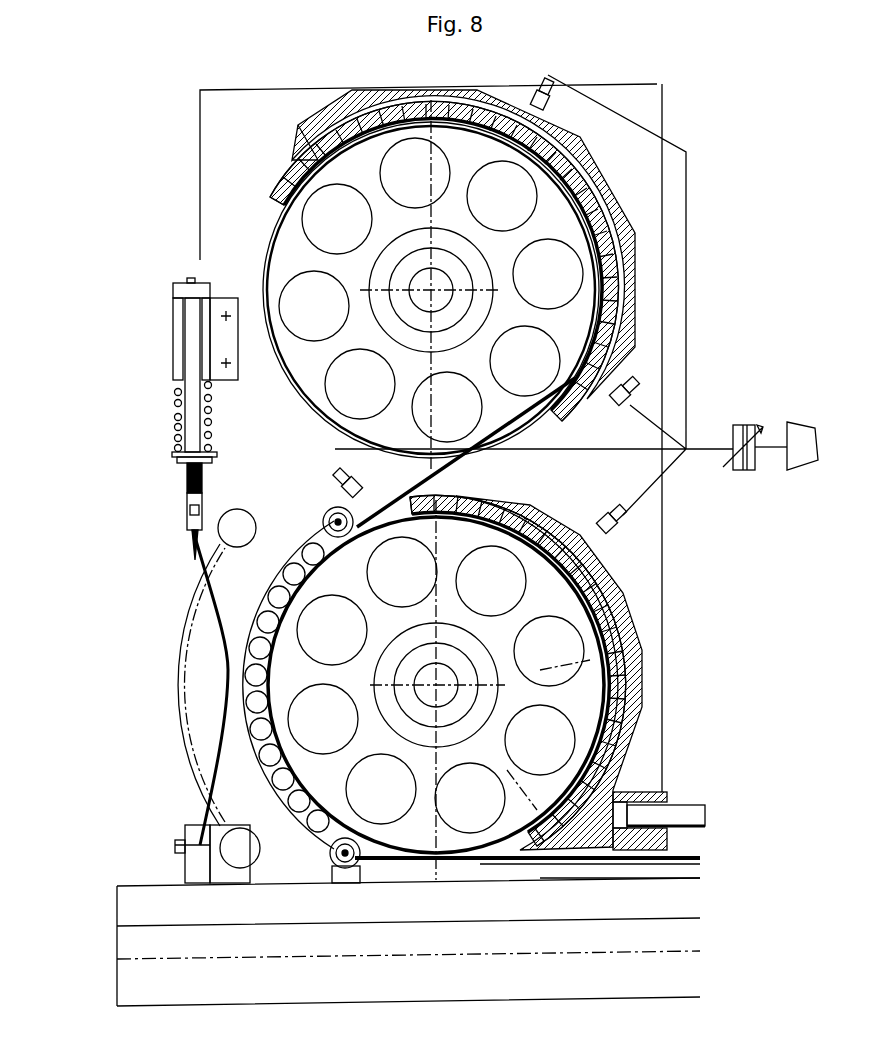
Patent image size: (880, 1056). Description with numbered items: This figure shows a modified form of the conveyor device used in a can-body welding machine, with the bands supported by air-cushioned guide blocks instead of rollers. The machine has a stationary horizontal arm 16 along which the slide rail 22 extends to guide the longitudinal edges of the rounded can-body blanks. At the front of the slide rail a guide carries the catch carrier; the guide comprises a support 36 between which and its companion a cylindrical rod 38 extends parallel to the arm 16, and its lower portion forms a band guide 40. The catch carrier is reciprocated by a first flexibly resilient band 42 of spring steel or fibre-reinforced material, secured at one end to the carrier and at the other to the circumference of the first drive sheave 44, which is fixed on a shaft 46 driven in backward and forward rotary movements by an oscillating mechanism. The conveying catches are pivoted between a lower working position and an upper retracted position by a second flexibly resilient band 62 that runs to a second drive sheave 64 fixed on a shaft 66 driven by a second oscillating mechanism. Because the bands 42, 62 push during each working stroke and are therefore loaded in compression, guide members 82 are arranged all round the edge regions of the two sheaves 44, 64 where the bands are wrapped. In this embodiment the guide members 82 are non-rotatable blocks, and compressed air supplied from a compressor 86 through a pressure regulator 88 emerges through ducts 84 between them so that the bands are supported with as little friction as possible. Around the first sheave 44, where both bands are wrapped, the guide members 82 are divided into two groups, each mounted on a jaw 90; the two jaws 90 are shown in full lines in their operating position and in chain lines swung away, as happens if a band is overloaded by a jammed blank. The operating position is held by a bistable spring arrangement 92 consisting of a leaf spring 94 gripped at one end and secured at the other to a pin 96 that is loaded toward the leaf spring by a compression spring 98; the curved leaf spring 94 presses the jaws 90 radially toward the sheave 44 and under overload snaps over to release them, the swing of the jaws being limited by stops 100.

The stationary horizontal arm 16 is at (390, 985).
The slide rail 22 is at (162, 895).
The support 36 is at (665, 792).
The cylindrical rod 38 is at (695, 808).
The band guide 40 is at (567, 870).
The first flexibly resilient band 42 is at (700, 856).
The first drive disc or sheave 44 is at (630, 741).
The shaft 46 is at (443, 675).
The second flexibly resilient band 62 is at (700, 862).
The second drive disc or sheave 64 is at (560, 213).
The shaft 66 is at (440, 280).
The guide members 82 is at (610, 300).
The ducts 84 is at (620, 330).
The compressor 86 is at (803, 460).
The pressure regulator 88 is at (747, 472).
The jaws 90 is at (333, 508).
The bistable spring arrangement 92 is at (163, 312).
The leaf spring 94 is at (190, 540).
The pin 96 is at (188, 482).
The compression spring 98 is at (175, 405).
The stops 100 is at (230, 519).